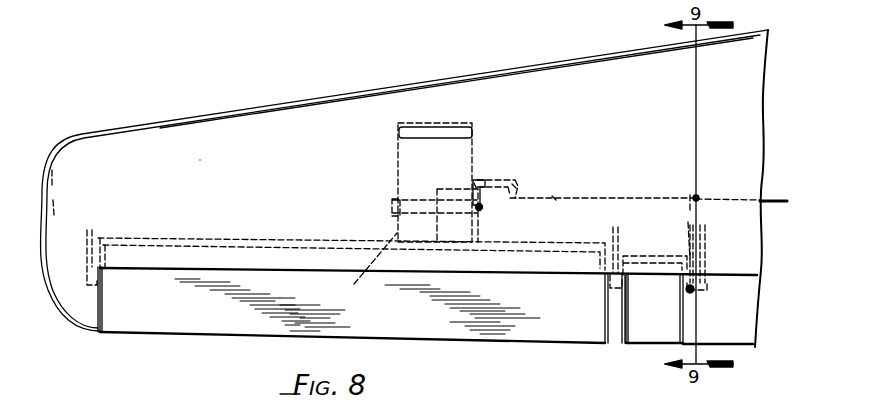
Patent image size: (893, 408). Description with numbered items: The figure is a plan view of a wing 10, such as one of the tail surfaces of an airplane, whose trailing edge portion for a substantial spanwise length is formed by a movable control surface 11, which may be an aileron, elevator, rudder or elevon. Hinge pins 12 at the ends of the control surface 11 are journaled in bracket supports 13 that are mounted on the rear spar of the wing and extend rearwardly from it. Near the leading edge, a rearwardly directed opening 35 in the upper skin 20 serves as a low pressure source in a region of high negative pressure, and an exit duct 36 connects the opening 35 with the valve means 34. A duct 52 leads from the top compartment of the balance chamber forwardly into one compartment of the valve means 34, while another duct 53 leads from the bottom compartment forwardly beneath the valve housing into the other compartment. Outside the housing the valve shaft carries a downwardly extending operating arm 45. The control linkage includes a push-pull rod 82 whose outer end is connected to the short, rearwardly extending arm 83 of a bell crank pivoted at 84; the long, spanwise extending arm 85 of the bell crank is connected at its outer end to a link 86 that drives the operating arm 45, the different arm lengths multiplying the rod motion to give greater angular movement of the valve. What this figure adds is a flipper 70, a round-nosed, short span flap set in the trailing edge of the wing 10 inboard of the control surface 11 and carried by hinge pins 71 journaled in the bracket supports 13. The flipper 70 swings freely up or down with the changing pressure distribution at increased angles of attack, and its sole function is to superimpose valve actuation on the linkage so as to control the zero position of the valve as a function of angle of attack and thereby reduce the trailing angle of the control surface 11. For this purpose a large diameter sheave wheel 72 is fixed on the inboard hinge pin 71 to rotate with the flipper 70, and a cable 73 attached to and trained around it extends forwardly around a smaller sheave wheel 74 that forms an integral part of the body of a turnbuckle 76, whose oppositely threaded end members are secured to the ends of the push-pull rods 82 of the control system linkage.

The wing 10 is at (225, 109).
The control surface 11 is at (172, 322).
The hinge pins 12 is at (105, 299).
The bracket supports 13 is at (93, 231).
The upper skin 20 is at (290, 180).
The valve means 34 is at (392, 205).
The rearwardly directed opening 35 is at (450, 131).
The exit duct 36 is at (474, 164).
The operating arm 45 is at (487, 215).
The duct 52 is at (362, 266).
The duct 53 is at (476, 226).
The flipper 70 is at (653, 333).
The hinge pins 71 is at (627, 310).
The sheave wheel 72 is at (692, 300).
The cable 73 is at (688, 222).
The sheave wheel 74 is at (690, 195).
The turnbuckle 76 is at (700, 197).
The push-pull rod 82 is at (615, 197).
The arm 83 is at (557, 214).
The pivot 84 is at (566, 188).
The arm 85 is at (517, 188).
The link 86 is at (474, 186).